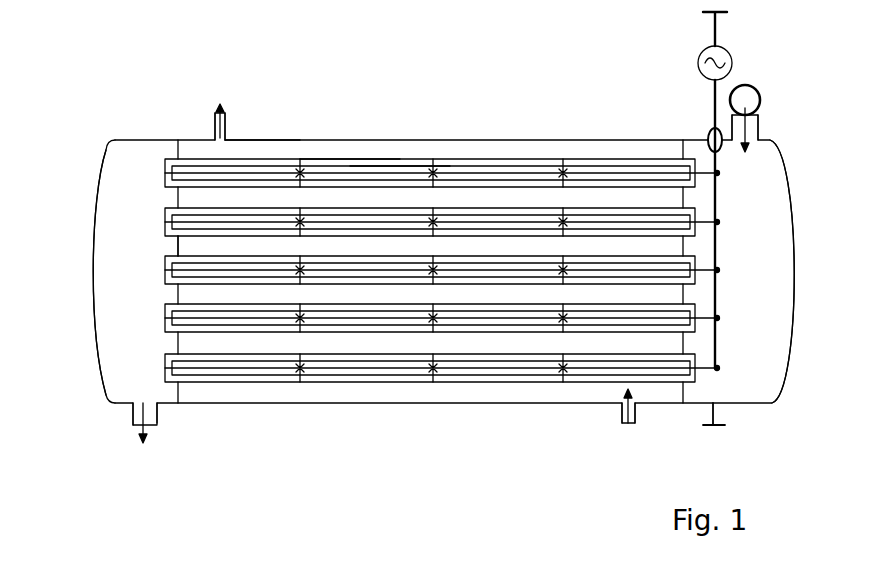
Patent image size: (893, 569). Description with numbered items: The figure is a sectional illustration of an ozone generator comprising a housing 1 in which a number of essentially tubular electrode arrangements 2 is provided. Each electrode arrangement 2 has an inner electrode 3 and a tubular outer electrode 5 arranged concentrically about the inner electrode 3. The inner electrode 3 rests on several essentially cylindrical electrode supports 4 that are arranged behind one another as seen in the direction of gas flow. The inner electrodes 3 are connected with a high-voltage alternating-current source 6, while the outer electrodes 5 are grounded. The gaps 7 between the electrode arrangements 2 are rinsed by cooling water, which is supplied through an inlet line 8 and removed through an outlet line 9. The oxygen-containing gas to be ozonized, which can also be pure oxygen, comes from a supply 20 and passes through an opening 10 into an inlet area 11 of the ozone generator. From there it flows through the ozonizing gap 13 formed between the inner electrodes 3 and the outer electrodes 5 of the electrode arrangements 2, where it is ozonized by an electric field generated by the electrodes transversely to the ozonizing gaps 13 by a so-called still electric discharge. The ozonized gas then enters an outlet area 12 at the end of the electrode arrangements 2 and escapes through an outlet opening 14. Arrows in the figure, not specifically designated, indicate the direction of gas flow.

The housing 1 is at (103, 387).
The electrode arrangement 2 is at (163, 153).
The inner electrode 3 is at (192, 134).
The electrode support 4 is at (253, 150).
The outer electrode 5 is at (350, 154).
The high-voltage alternating-current source 6 is at (700, 52).
The gap 7 is at (163, 238).
The inlet line 8 is at (620, 413).
The outlet line 9 is at (234, 138).
The opening 10 is at (762, 116).
The inlet area 11 is at (771, 271).
The outlet area 12 is at (113, 272).
The ozonizing gap 13 is at (395, 154).
The outlet opening 14 is at (157, 413).
The supply 20 is at (749, 86).